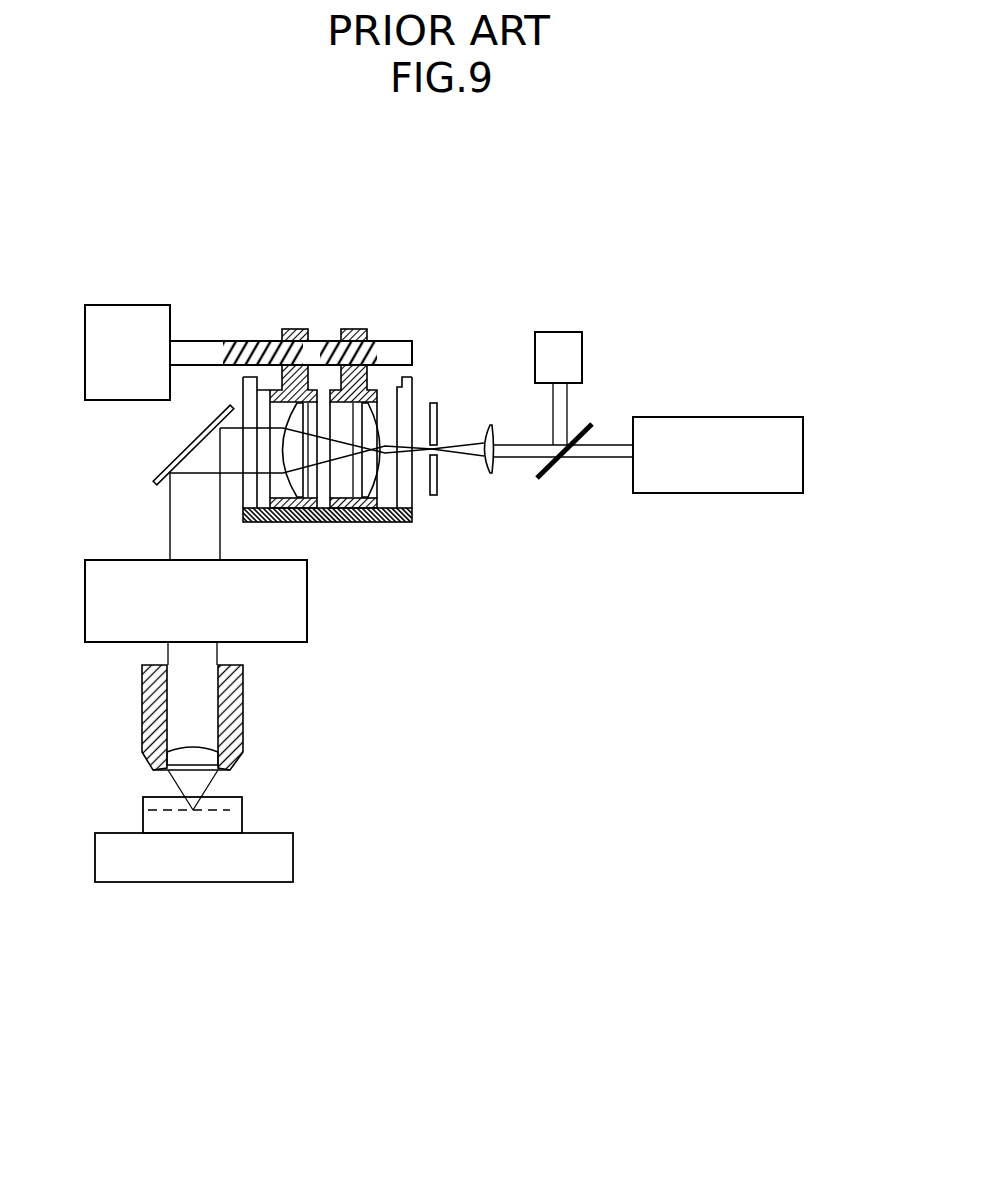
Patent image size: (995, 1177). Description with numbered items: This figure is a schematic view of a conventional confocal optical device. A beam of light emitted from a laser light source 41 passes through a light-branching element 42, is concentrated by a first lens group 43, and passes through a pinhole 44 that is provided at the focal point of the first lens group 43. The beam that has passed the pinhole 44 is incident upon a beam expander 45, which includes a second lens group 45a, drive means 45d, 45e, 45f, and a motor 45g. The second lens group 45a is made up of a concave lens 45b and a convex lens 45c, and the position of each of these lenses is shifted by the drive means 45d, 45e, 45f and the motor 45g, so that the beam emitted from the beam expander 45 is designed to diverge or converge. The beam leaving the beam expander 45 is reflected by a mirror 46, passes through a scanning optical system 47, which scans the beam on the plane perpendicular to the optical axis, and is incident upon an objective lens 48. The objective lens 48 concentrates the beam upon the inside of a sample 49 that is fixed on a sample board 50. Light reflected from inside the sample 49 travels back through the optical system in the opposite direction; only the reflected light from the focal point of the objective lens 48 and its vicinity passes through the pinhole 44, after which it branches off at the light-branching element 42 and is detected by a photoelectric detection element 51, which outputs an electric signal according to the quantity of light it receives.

The laser light source 41 is at (750, 443).
The light-branching element 42 is at (537, 478).
The first lens group 43 is at (487, 474).
The pinhole 44 is at (433, 495).
The beam expander 45 is at (430, 353).
The second lens group 45a is at (377, 528).
The concave lens 45b is at (383, 525).
The convex lens 45c is at (297, 437).
The drive means 45d is at (407, 343).
The drive means 45e is at (400, 320).
The drive means 45f is at (307, 320).
The motor 45g is at (137, 328).
The mirror 46 is at (177, 460).
The scanning optical system 47 is at (278, 623).
The objective lens 48 is at (185, 753).
The sample 49 is at (232, 803).
The sample board 50 is at (273, 872).
The photoelectric detection element 51 is at (558, 348).